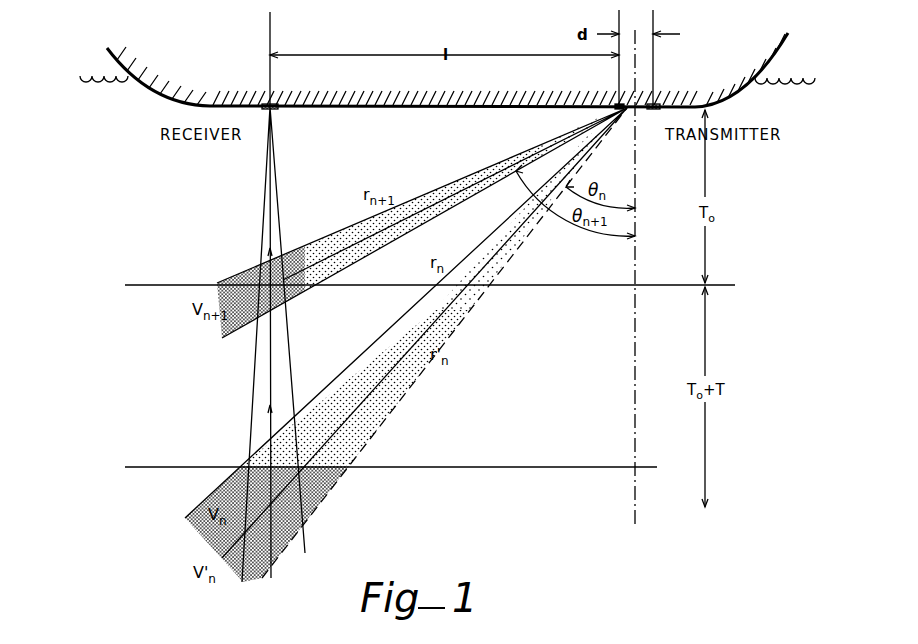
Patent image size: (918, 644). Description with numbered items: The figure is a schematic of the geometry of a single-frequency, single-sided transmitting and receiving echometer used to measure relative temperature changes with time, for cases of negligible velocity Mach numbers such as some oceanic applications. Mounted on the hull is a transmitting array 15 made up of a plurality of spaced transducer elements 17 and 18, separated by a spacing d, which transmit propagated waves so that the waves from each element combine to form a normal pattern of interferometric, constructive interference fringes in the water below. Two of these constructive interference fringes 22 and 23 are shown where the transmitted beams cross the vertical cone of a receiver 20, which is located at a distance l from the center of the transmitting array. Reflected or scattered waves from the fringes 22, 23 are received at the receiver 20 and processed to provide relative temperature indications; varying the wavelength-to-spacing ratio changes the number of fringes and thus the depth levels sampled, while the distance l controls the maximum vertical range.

The transmitting array 15 is at (649, 132).
The transducer element 17 is at (622, 110).
The transducer element 18 is at (660, 98).
The receiver 20 is at (278, 110).
The constructive interference fringe 22 is at (290, 305).
The constructive interference fringe 23 is at (247, 454).